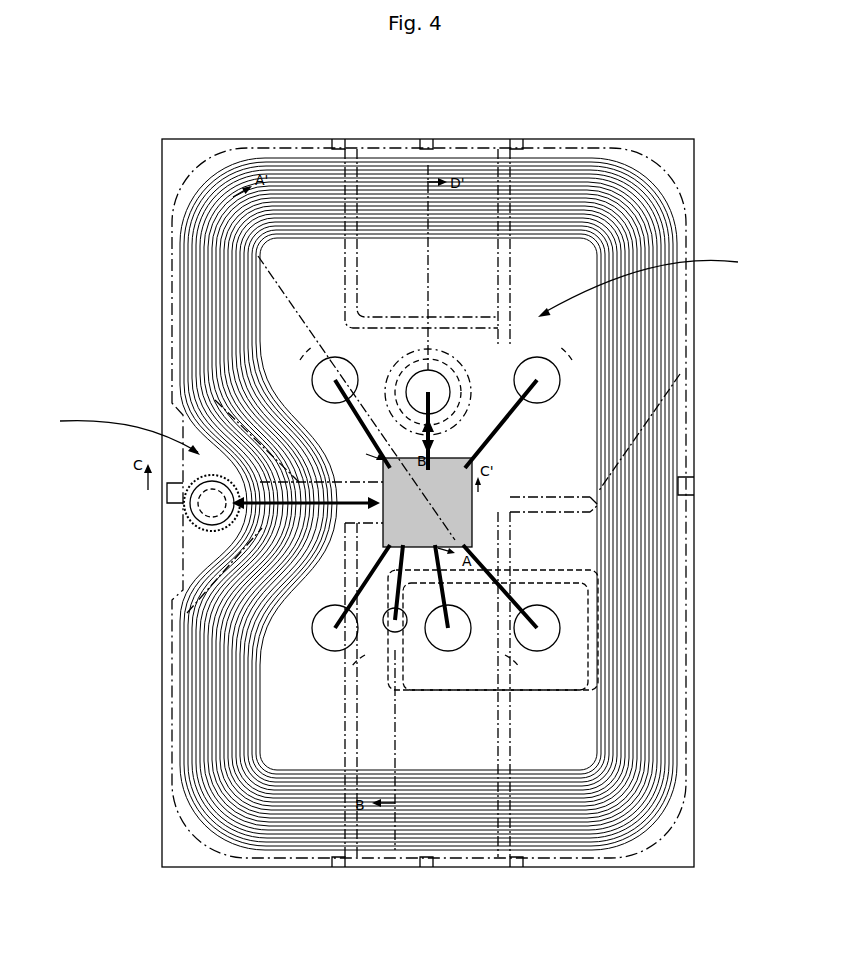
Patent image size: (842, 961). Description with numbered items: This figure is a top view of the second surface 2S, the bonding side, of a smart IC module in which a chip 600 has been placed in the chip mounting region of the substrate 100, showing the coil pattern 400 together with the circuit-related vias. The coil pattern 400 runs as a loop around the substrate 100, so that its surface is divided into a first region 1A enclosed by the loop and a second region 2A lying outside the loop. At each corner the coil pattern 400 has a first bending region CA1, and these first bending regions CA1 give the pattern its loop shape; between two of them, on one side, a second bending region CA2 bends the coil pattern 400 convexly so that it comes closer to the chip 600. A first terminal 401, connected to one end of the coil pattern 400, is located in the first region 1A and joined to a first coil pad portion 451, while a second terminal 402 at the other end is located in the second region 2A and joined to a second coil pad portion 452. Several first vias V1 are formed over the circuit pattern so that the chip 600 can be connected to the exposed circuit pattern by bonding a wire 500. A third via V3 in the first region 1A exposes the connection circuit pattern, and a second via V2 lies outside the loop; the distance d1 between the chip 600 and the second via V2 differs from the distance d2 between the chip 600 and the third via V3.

The substrate 100 is at (694, 312).
The second surface 2S is at (680, 166).
The first region 1A is at (651, 285).
The second region 2A is at (118, 435).
The coil pattern 400 is at (656, 477).
The first terminal 401 is at (405, 610).
The second terminal 402 is at (205, 480).
The first coil pad portion 451 is at (398, 633).
The second coil pad portion 452 is at (205, 510).
The wire 500 is at (523, 357).
The chip 600 is at (440, 490).
The first via V1 is at (313, 372).
The second via V2 is at (222, 520).
The third via V3 is at (402, 358).
The first bending region CA1 is at (610, 192).
The second bending region CA2 is at (290, 592).
The distance d1 is at (330, 482).
The distance d2 is at (385, 457).